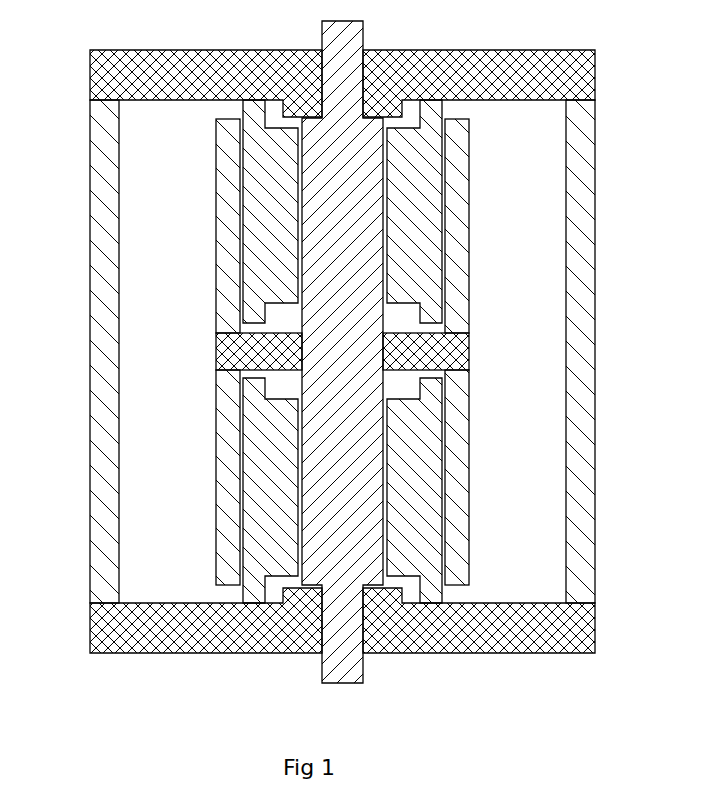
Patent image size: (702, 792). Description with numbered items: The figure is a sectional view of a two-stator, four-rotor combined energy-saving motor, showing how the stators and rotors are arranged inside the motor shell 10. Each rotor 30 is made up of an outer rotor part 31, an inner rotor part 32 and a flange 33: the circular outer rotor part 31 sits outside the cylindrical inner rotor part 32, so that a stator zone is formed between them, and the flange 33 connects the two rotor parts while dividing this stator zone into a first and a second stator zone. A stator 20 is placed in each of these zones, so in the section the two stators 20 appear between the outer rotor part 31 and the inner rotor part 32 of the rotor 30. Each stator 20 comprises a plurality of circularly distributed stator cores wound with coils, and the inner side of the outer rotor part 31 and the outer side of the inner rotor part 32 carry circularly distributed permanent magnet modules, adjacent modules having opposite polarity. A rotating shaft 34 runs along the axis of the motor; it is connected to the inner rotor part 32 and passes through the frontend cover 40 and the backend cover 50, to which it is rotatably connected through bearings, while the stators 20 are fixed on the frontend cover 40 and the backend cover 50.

The motor shell 10 is at (96, 473).
The stator 20 is at (273, 210).
The rotor 30 is at (460, 495).
The outer rotor part 31 is at (228, 232).
The inner rotor part 32 is at (322, 272).
The flange 33 is at (232, 352).
The rotating shaft 34 is at (342, 660).
The frontend cover 40 is at (432, 642).
The backend cover 50 is at (510, 72).